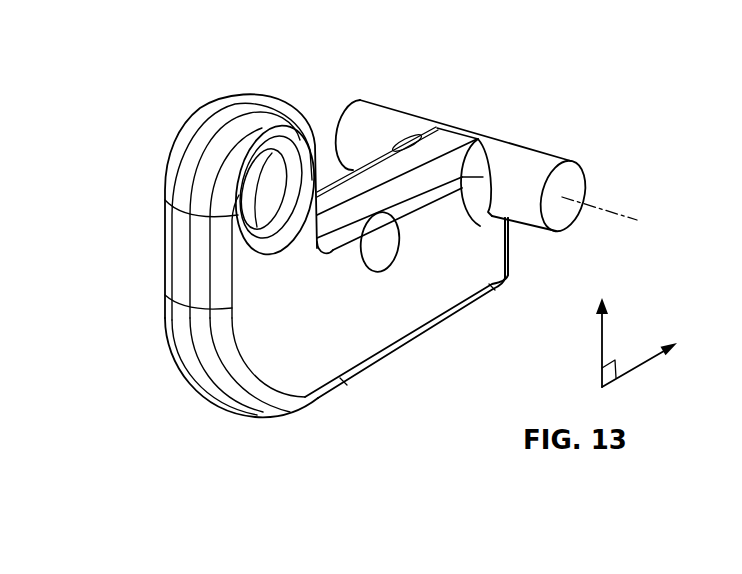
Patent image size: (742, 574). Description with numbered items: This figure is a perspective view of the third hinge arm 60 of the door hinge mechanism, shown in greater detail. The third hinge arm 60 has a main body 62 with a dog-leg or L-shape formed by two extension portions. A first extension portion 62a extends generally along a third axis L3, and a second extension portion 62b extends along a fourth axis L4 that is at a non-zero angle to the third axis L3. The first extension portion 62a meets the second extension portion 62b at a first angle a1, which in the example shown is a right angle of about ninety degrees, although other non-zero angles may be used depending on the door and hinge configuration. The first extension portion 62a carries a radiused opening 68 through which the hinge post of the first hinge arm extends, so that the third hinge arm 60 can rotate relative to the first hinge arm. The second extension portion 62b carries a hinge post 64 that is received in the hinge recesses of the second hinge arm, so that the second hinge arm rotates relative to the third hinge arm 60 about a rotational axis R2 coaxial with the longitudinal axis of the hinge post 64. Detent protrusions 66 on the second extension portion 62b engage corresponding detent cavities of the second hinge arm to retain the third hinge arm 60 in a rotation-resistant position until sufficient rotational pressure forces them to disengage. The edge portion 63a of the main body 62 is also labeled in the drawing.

The third hinge arm 60 is at (158, 102).
The main body 62 is at (388, 330).
The first extension portion 62a is at (250, 286).
The second extension portion 62b is at (492, 262).
The rolled edge portion 63a is at (410, 150).
The hinge post 64 is at (528, 172).
The detent protrusion 66 is at (377, 253).
The radiused opening 68 is at (250, 187).
The rotational axis R2 is at (621, 219).
The third axis L3 is at (585, 342).
The fourth axis L4 is at (639, 374).
The first angle a1 is at (621, 356).